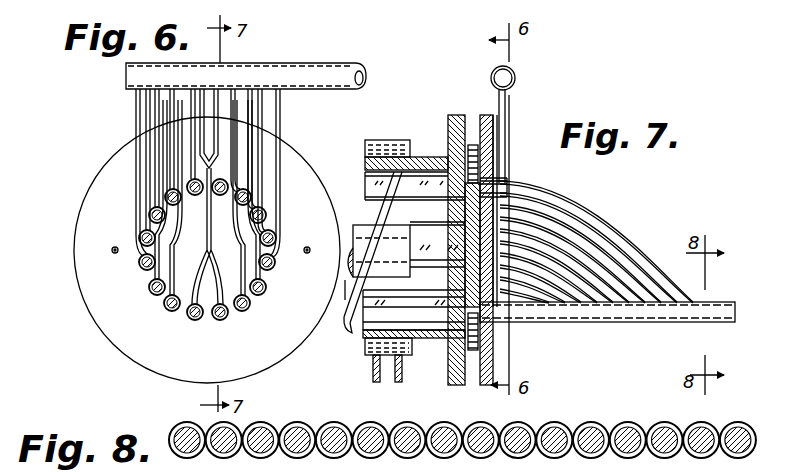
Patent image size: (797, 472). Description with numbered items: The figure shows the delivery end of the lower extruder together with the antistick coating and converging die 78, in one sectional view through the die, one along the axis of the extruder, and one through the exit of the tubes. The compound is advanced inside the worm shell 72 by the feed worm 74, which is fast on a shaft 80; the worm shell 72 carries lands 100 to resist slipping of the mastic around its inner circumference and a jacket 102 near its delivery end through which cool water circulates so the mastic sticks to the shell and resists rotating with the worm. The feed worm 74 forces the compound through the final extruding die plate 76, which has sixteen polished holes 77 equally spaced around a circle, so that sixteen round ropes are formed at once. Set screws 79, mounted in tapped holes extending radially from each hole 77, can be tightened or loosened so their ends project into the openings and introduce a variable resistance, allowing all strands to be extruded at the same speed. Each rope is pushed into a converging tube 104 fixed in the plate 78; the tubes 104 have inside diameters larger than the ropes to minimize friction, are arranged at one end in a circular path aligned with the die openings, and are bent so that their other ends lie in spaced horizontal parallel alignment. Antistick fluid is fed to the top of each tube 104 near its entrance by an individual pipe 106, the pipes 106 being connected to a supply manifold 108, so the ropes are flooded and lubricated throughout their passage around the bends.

In FIG. 7, the worm shell 72 is at (428, 340).
In FIG. 7, the feed worm 74 is at (352, 324).
In FIG. 7, the final extruding die plate 76 is at (456, 115).
In FIG. 7, the holes 77 is at (463, 185).
In FIG. 6, the antistick coating and converging die 78 is at (107, 165).
In FIG. 7, the antistick coating and converging die 78 is at (494, 123).
In FIG. 7, the set screws 79 is at (479, 168).
In FIG. 7, the shaft 80 is at (410, 237).
In FIG. 7, the lands 100 is at (447, 277).
In FIG. 7, the jacket 102 is at (407, 141).
In FIG. 6, the converging tubes 104 is at (165, 303).
In FIG. 7, the converging tubes 104 is at (575, 235).
In FIG. 8, the converging tubes 104 is at (340, 424).
In FIG. 6, the pipes 106 is at (147, 115).
In FIG. 7, the pipes 106 is at (506, 133).
In FIG. 6, the supply manifold 108 is at (263, 63).
In FIG. 7, the supply manifold 108 is at (516, 70).